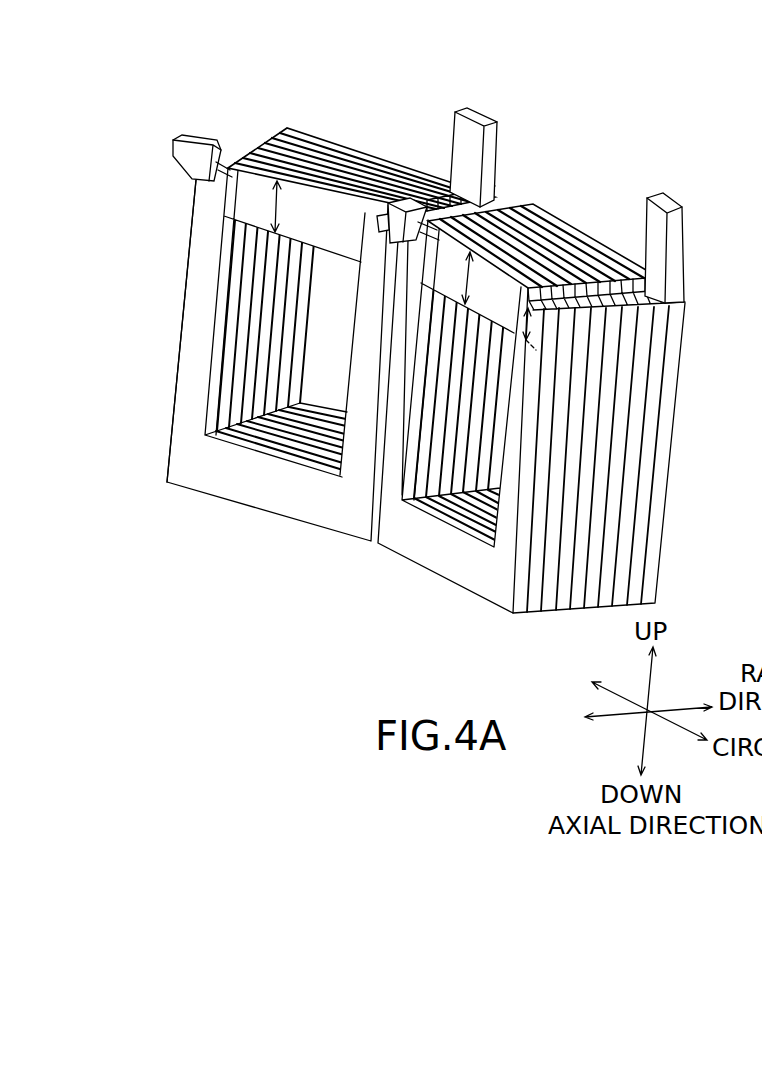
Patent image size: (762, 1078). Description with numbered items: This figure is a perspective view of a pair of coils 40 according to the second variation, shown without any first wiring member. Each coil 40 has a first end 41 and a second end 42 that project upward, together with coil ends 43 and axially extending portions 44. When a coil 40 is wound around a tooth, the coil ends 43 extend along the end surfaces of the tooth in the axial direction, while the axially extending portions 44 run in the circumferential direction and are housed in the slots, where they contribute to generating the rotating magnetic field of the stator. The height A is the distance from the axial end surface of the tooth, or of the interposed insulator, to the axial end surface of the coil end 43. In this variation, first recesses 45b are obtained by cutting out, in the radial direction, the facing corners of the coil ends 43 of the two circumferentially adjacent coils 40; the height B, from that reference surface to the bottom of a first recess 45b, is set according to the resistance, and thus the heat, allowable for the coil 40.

The coil 40 is at (303, 103).
The first end 41 is at (200, 130).
The second end 42 is at (483, 108).
The coil end 43 is at (352, 143).
The axially extending portion 44 is at (175, 303).
The first recess 45b is at (504, 197).
The height A is at (385, 242).
The height B is at (528, 322).